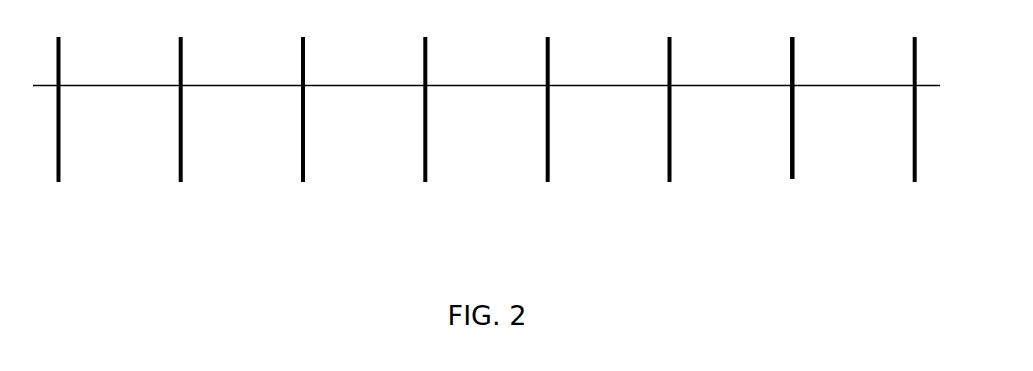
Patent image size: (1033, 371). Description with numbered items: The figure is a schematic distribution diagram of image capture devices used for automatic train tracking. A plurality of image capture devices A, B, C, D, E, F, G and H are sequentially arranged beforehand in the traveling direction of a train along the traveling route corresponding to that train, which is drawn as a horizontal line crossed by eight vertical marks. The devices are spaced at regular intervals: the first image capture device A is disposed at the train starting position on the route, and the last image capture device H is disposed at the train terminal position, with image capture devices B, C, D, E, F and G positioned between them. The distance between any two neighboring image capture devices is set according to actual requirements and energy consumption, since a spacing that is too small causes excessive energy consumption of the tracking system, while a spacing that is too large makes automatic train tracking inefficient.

The image capture device A is at (58, 128).
The image capture device B is at (180, 128).
The image capture device C is at (302, 128).
The image capture device D is at (425, 128).
The image capture device E is at (548, 128).
The image capture device F is at (669, 128).
The image capture device G is at (792, 128).
The image capture device H is at (914, 128).